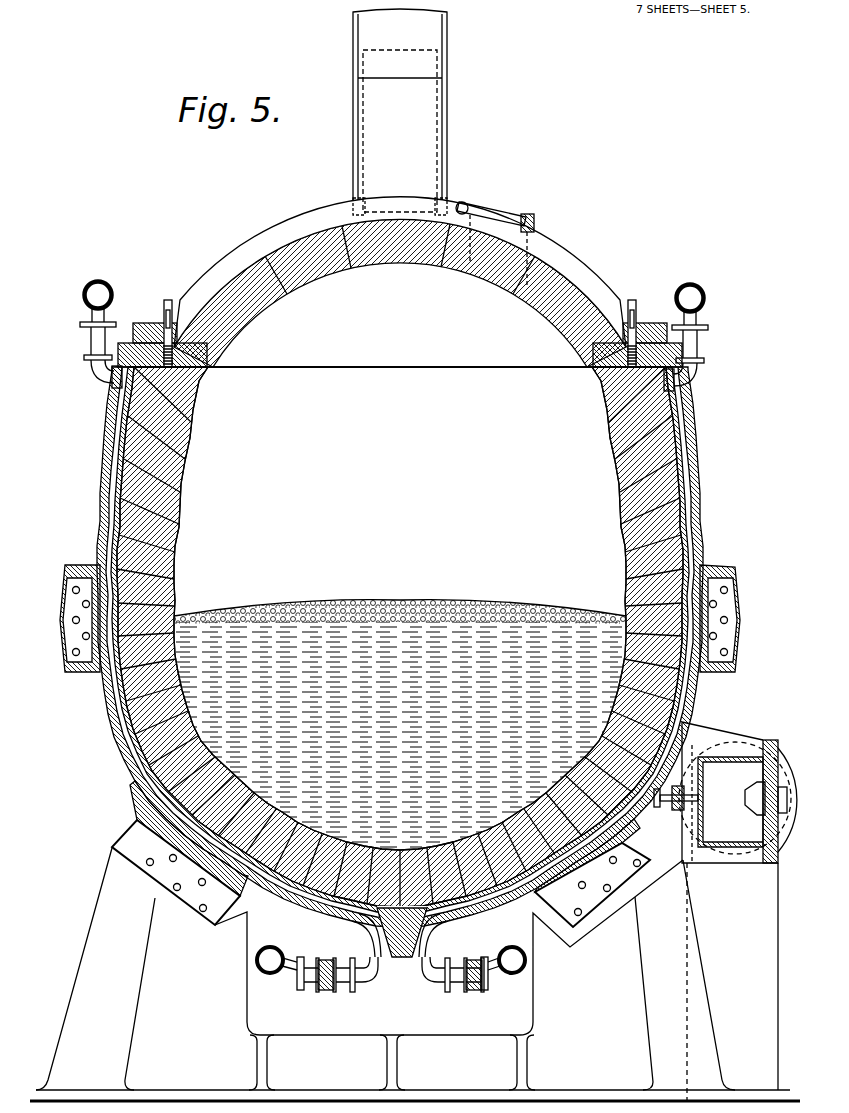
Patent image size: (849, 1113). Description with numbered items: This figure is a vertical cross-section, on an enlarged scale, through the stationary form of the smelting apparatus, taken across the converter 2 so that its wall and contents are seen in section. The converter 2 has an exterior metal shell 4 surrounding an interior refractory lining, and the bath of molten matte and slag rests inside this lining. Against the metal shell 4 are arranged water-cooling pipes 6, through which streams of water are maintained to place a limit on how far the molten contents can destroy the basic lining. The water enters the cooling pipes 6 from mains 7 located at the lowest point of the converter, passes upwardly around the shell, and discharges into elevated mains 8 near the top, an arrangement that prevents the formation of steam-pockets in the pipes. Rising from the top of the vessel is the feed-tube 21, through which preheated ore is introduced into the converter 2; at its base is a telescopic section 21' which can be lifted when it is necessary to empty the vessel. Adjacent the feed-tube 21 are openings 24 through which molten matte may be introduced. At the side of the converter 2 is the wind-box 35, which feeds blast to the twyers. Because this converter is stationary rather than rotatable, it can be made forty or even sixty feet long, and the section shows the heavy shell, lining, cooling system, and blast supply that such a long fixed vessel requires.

The converter 2 is at (400, 610).
The exterior metal shell 4 is at (103, 460).
The water-cooling pipes 6 is at (118, 492).
The mains 7 is at (270, 975).
The elevated mains 8 is at (113, 296).
The feed-tube 21 is at (400, 104).
The telescopic section 21' is at (400, 132).
The openings 24 is at (507, 218).
The wind-box 35 is at (725, 792).